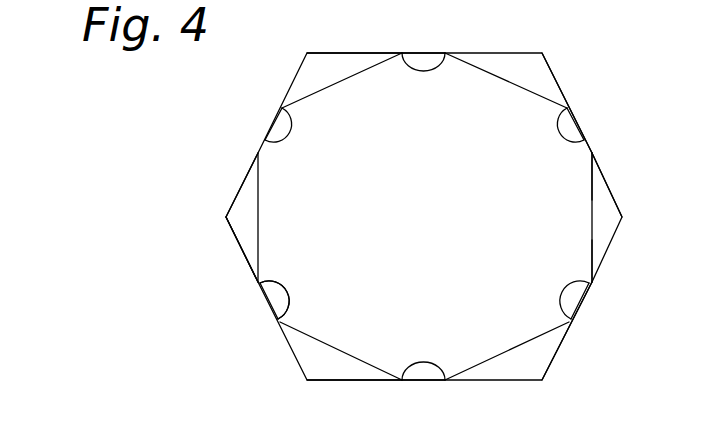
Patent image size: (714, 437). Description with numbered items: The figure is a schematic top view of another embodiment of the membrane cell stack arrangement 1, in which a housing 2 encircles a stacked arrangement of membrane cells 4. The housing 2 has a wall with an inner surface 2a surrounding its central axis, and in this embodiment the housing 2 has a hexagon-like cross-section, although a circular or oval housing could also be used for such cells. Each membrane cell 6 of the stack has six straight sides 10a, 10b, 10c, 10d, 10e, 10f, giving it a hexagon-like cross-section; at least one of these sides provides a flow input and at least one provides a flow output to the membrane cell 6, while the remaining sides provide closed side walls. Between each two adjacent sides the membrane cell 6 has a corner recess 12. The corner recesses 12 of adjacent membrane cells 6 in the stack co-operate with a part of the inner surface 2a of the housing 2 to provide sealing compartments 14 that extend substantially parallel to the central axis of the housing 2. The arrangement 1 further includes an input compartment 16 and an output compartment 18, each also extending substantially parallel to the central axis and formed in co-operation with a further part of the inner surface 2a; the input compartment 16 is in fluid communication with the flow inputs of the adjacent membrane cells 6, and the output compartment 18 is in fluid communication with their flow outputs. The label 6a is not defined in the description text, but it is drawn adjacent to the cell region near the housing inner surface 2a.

The membrane cell stack arrangement 1 is at (165, 167).
The housing 2 is at (238, 183).
The inner surface 2a is at (248, 250).
The stacked arrangement of membrane cells 4 is at (600, 153).
The membrane cell 6 is at (270, 293).
The inner joint region 6a is at (562, 257).
The side 10a is at (497, 357).
The side 10b is at (295, 352).
The side 10c is at (335, 85).
The side 10d is at (483, 70).
The side 10e is at (257, 208).
The side 10f is at (592, 225).
The corner recess 12 is at (410, 60).
The sealing compartment 14 is at (437, 62).
The input compartment 16 is at (607, 212).
The output compartment 18 is at (312, 70).